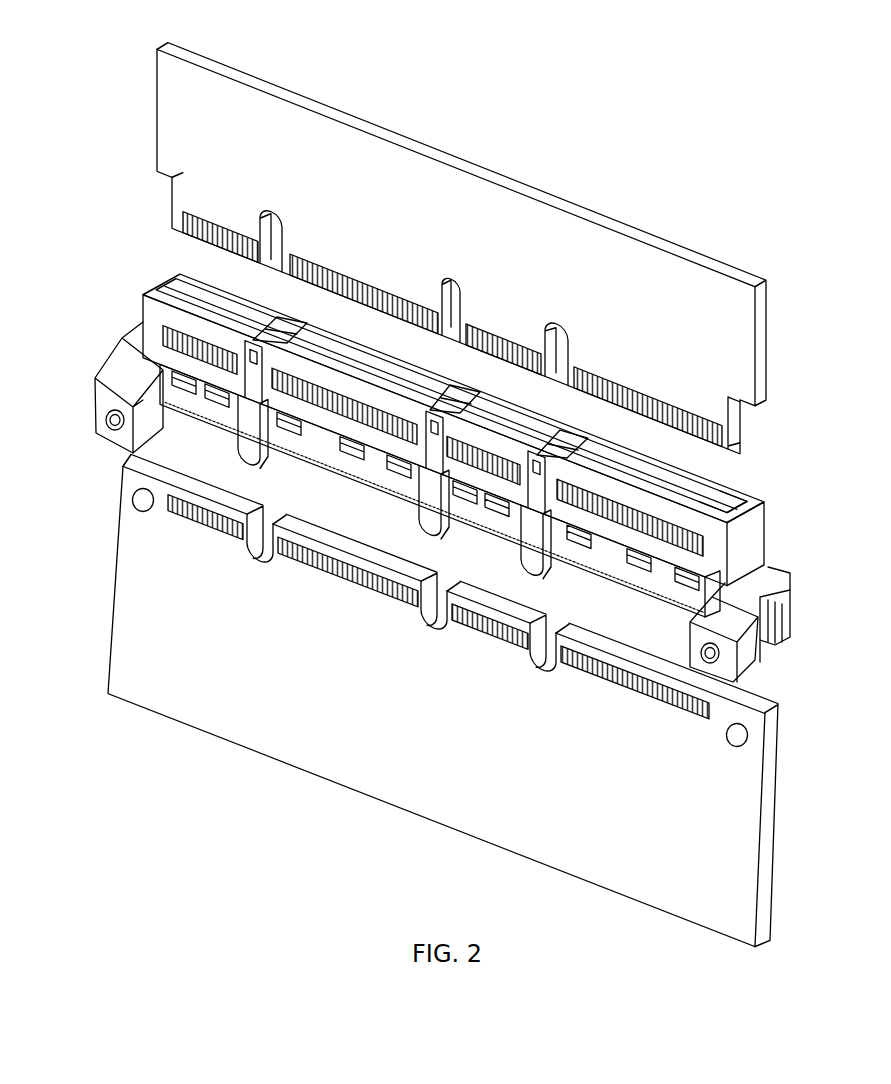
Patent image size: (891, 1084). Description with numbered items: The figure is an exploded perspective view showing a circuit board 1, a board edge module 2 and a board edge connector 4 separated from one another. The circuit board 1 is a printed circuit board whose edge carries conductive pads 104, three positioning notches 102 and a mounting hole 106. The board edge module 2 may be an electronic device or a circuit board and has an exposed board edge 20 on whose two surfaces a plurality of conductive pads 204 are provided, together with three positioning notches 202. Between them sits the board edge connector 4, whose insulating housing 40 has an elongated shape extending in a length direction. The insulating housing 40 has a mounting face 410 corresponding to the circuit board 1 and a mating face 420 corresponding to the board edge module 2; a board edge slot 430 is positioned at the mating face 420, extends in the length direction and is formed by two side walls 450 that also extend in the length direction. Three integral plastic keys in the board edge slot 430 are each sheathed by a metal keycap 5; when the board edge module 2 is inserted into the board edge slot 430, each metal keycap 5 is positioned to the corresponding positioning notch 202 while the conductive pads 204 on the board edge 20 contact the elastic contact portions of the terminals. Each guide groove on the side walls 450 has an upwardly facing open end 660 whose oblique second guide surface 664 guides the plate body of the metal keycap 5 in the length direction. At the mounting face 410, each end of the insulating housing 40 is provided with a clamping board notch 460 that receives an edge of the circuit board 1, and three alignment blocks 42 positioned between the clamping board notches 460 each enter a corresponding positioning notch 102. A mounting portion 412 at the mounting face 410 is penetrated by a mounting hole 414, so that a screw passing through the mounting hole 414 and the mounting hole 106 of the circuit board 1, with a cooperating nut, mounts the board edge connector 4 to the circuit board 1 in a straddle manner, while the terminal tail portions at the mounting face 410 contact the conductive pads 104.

The circuit board 1 is at (470, 701).
The positioning notch 102 is at (256, 566).
The conductive pad 104 is at (184, 516).
The mounting hole 106 is at (748, 739).
The board edge module 2 is at (475, 251).
The board edge 20 is at (740, 408).
The positioning notch 202 is at (574, 325).
The conductive pad 204 is at (628, 385).
The board edge connector 4 is at (440, 460).
The insulating housing 40 is at (437, 419).
The mating face 420 is at (158, 290).
The board edge slot 430 is at (722, 504).
The mounting face 410 is at (168, 408).
The mounting portion 412 is at (95, 395).
The mounting hole 414 is at (112, 430).
The alignment block 42 is at (420, 506).
The side wall 450 is at (771, 601).
The clamping board notch 460 is at (782, 614).
The metal keycap 5 is at (278, 325).
The open end 660 is at (452, 392).
The second guide surface 664 is at (562, 432).